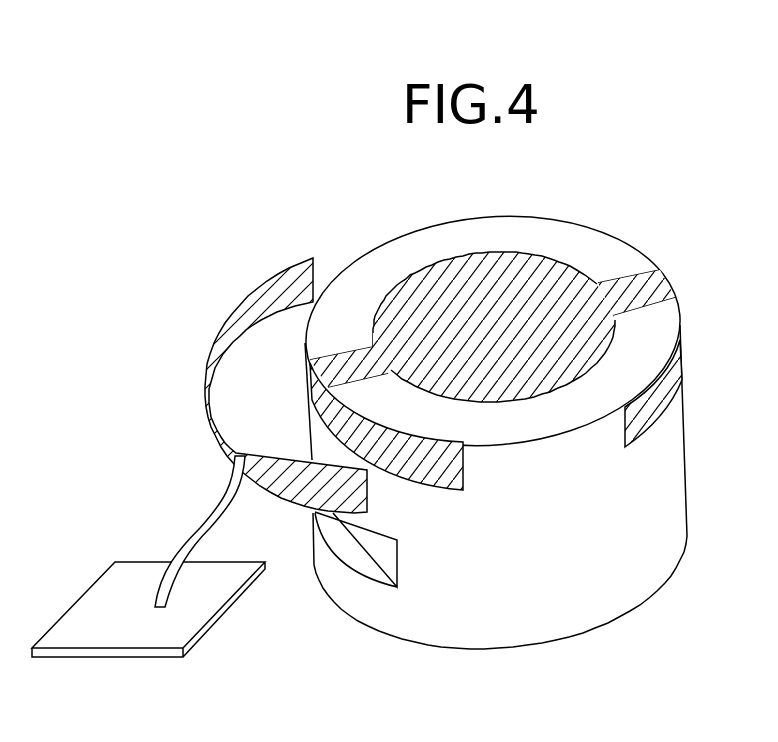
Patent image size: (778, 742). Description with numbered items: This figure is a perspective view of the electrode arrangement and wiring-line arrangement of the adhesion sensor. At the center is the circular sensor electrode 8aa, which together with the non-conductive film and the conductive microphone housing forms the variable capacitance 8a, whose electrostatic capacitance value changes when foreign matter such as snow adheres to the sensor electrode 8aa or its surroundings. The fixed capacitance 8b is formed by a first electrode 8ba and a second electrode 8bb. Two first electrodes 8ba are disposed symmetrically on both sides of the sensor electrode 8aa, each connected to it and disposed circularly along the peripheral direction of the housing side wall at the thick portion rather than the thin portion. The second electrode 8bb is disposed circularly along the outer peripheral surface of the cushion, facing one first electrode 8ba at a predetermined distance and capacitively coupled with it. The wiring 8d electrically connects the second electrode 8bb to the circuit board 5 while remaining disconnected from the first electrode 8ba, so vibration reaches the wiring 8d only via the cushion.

The variable capacitance 8a is at (492, 404).
The sensor electrode 8aa is at (481, 262).
The fixed capacitance 8b is at (275, 465).
The first electrode 8ba is at (427, 478).
The second electrode 8bb is at (238, 300).
The wiring 8d is at (220, 504).
The circuit board 5 is at (167, 658).